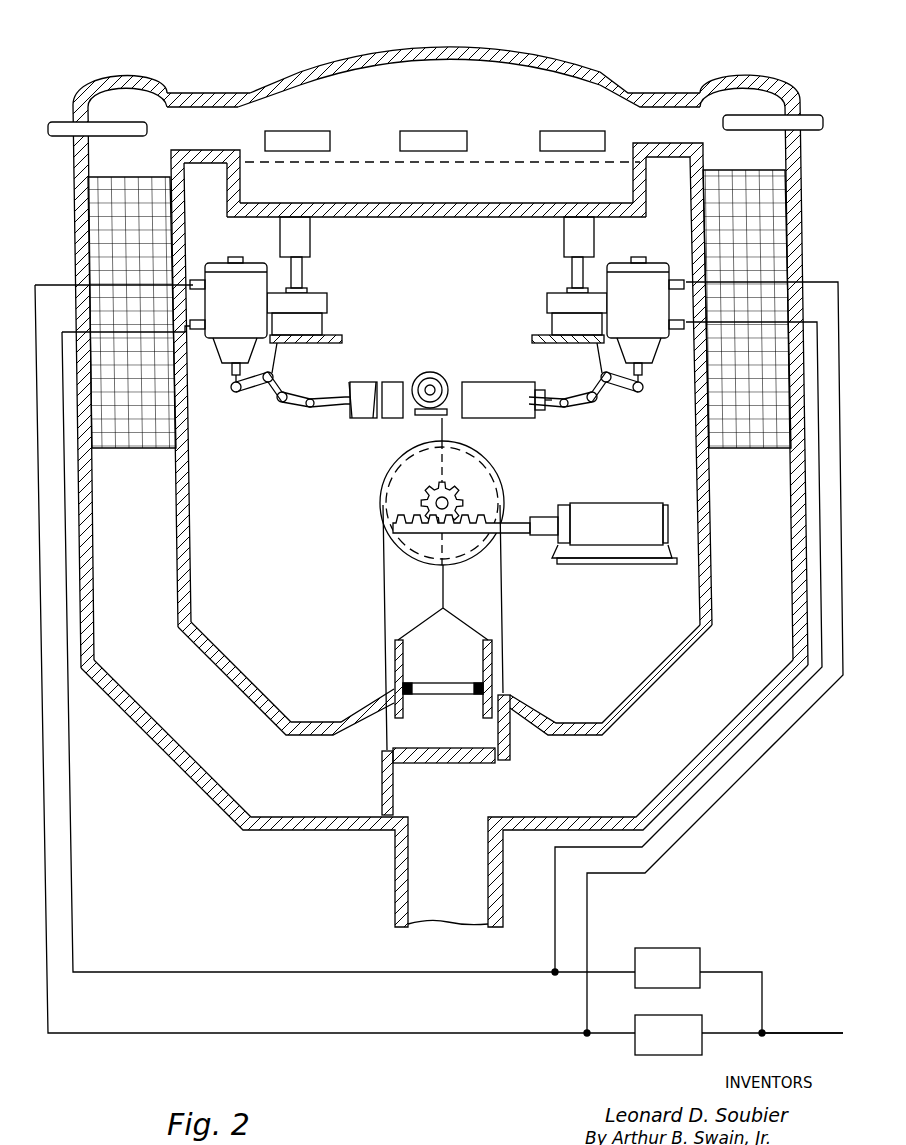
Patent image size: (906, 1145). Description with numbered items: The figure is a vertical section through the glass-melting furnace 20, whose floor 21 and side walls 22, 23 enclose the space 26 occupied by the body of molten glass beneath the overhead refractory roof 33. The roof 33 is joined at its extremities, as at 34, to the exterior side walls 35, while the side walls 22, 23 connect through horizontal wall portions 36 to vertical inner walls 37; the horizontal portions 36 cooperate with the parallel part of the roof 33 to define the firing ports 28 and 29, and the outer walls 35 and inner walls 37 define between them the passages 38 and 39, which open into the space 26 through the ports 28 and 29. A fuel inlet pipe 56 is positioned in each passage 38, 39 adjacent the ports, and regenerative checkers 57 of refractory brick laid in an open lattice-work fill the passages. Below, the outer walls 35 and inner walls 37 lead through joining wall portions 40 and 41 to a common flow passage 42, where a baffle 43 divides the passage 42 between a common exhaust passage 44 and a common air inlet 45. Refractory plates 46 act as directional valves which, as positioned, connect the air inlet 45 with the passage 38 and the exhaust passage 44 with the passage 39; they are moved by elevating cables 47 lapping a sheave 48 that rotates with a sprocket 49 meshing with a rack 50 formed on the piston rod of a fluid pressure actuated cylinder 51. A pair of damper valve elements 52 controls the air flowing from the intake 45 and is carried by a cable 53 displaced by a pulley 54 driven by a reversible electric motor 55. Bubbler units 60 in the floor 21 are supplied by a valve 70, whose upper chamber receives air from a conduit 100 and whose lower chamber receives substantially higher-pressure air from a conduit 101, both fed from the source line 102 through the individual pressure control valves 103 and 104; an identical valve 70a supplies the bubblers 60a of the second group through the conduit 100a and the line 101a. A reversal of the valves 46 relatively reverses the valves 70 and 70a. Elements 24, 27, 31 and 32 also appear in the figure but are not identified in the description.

The furnace 20 is at (453, 47).
The floor 21 is at (417, 208).
The side wall 22 is at (240, 204).
The side wall 23 is at (643, 193).
The sloping roof section 24 is at (302, 93).
The space 26 is at (485, 197).
The heating elements 27 is at (405, 140).
The port 28 is at (200, 115).
The port 29 is at (658, 107).
The gas flow direction 31 is at (162, 135).
The gas flow direction 32 is at (671, 132).
The overhead refractory roof 33 is at (530, 63).
The roof extremity joint 34 is at (113, 80).
The exterior side wall 35 is at (793, 237).
The horizontal wall portion 36 is at (187, 167).
The vertical inner wall 37 is at (183, 477).
The passage 38 is at (140, 507).
The passage 39 is at (755, 507).
The joining wall portion 40 is at (175, 741).
The joining wall portion 41 is at (263, 703).
The common flow passage 42 is at (423, 819).
The baffle 43 is at (453, 758).
The common exhaust passage 44 is at (460, 894).
The common air inlet 45 is at (428, 688).
The refractory plates 46 is at (505, 722).
The elevating cables 47 is at (383, 607).
The sheave 48 is at (402, 470).
The sprocket 49 is at (469, 499).
The rack 50 is at (398, 518).
The fluid pressure actuated cylinder 51 is at (588, 500).
The damper valve elements 52 is at (400, 657).
The cable 53 is at (445, 585).
The pulley 54 is at (437, 388).
The reversible electric motor 55 is at (419, 371).
The fuel inlet pipe 56 is at (112, 127).
The regenerative checkers 57 is at (172, 410).
The bubbler units 60 is at (304, 238).
The bubblers 60a is at (571, 238).
The valve 70 is at (250, 304).
The valve 70a is at (654, 304).
The conduit 100 is at (257, 1032).
The conduit 100a is at (587, 927).
The conduit 101 is at (255, 972).
The line 101a is at (555, 942).
The source line 102 is at (788, 1030).
The pressure control valve 103 is at (686, 1047).
The pressure control valve 104 is at (686, 981).